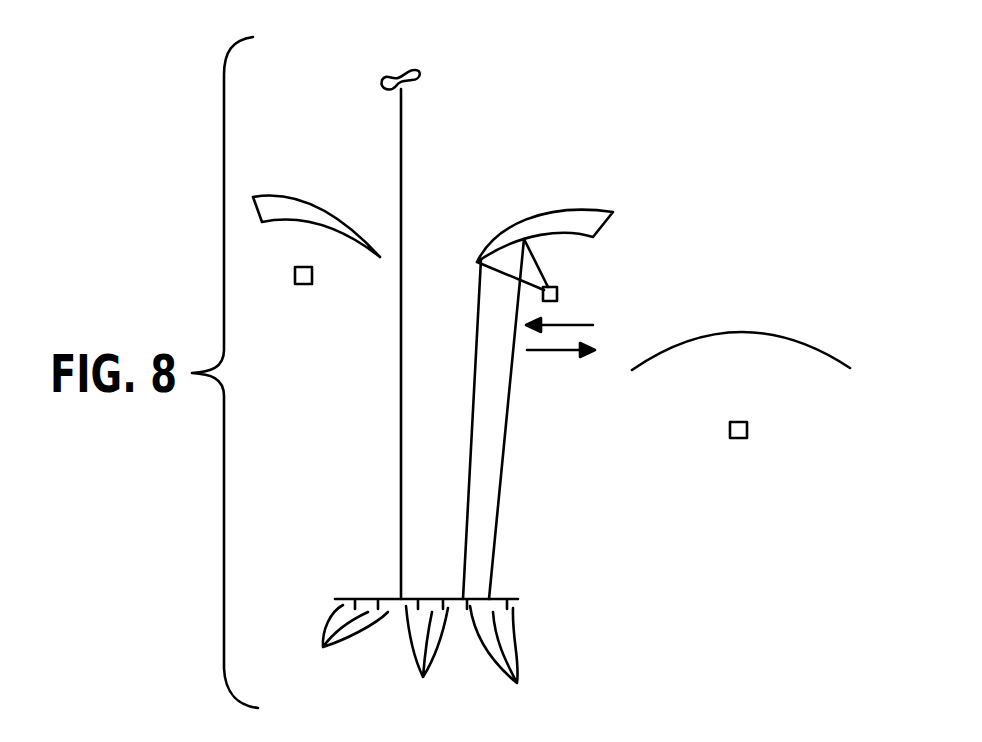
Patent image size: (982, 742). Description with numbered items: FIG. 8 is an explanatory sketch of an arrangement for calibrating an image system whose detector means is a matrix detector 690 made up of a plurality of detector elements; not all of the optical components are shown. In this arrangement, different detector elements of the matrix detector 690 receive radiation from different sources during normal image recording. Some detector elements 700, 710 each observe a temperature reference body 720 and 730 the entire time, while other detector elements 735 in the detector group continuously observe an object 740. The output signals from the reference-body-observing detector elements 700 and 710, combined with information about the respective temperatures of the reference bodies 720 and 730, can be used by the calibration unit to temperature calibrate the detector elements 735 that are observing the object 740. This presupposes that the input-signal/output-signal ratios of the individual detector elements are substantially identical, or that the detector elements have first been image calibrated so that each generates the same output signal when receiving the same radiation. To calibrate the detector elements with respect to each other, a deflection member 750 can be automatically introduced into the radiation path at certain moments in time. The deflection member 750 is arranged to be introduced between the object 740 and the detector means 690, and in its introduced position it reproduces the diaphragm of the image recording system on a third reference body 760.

The matrix detector 690 is at (508, 588).
The detector element 700 is at (520, 652).
The detector element 710 is at (350, 642).
The temperature reference body 720 is at (557, 298).
The temperature reference body 730 is at (312, 284).
The detector elements 735 is at (424, 657).
The object 740 is at (420, 73).
The deflection member 750 is at (752, 332).
The third reference body 760 is at (747, 424).